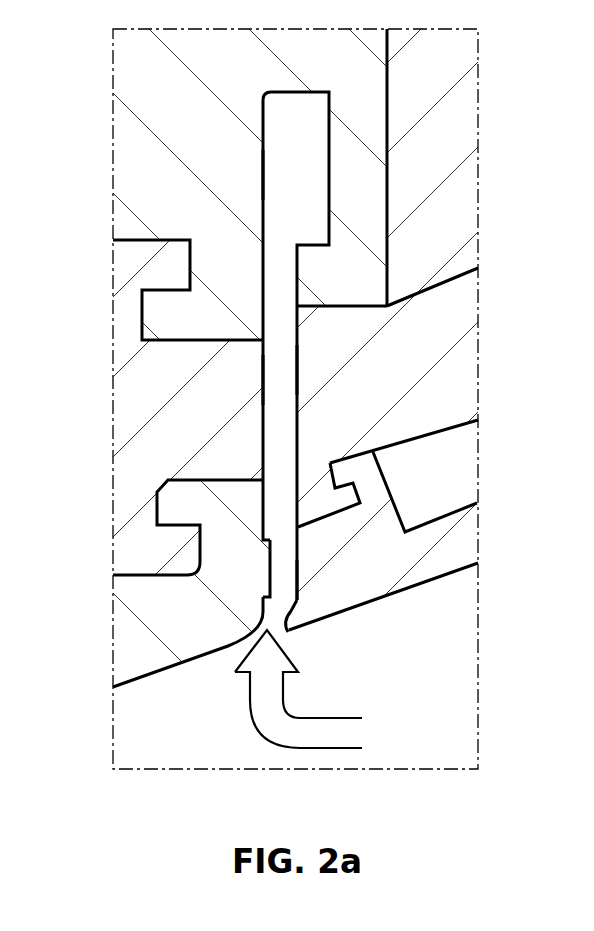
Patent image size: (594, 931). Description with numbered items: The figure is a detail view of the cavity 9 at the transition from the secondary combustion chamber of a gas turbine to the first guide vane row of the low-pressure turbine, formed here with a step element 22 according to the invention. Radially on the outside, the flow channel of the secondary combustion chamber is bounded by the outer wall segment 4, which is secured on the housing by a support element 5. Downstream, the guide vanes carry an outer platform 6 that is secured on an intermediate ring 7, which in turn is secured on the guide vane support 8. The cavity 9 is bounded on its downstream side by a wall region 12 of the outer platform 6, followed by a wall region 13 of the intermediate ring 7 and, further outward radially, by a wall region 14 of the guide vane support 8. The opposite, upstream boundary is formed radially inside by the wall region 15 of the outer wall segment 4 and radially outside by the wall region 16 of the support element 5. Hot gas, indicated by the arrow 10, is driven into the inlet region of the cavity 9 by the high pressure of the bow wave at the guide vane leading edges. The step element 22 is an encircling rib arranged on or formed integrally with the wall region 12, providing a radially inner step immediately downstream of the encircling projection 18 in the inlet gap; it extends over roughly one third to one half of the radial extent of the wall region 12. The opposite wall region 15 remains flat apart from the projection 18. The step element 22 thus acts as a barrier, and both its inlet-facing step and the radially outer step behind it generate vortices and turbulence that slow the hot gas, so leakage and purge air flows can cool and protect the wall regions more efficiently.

The outer wall segment 4 is at (346, 568).
The support element 5 is at (375, 397).
The outer platform 6 is at (187, 630).
The intermediate ring 7 is at (190, 432).
The guide vane support 8 is at (190, 137).
The cavity 9 is at (305, 205).
The hot gas flow 10 is at (268, 691).
The wall region of the outer platform 12 is at (252, 520).
The wall region of the intermediate ring 13 is at (258, 379).
The wall region of the guide vane support 14 is at (258, 174).
The wall region of the outer wall segment 15 is at (303, 582).
The wall region of the support element 16 is at (303, 368).
The encircling projection 18 is at (287, 633).
The step element 22 is at (262, 564).